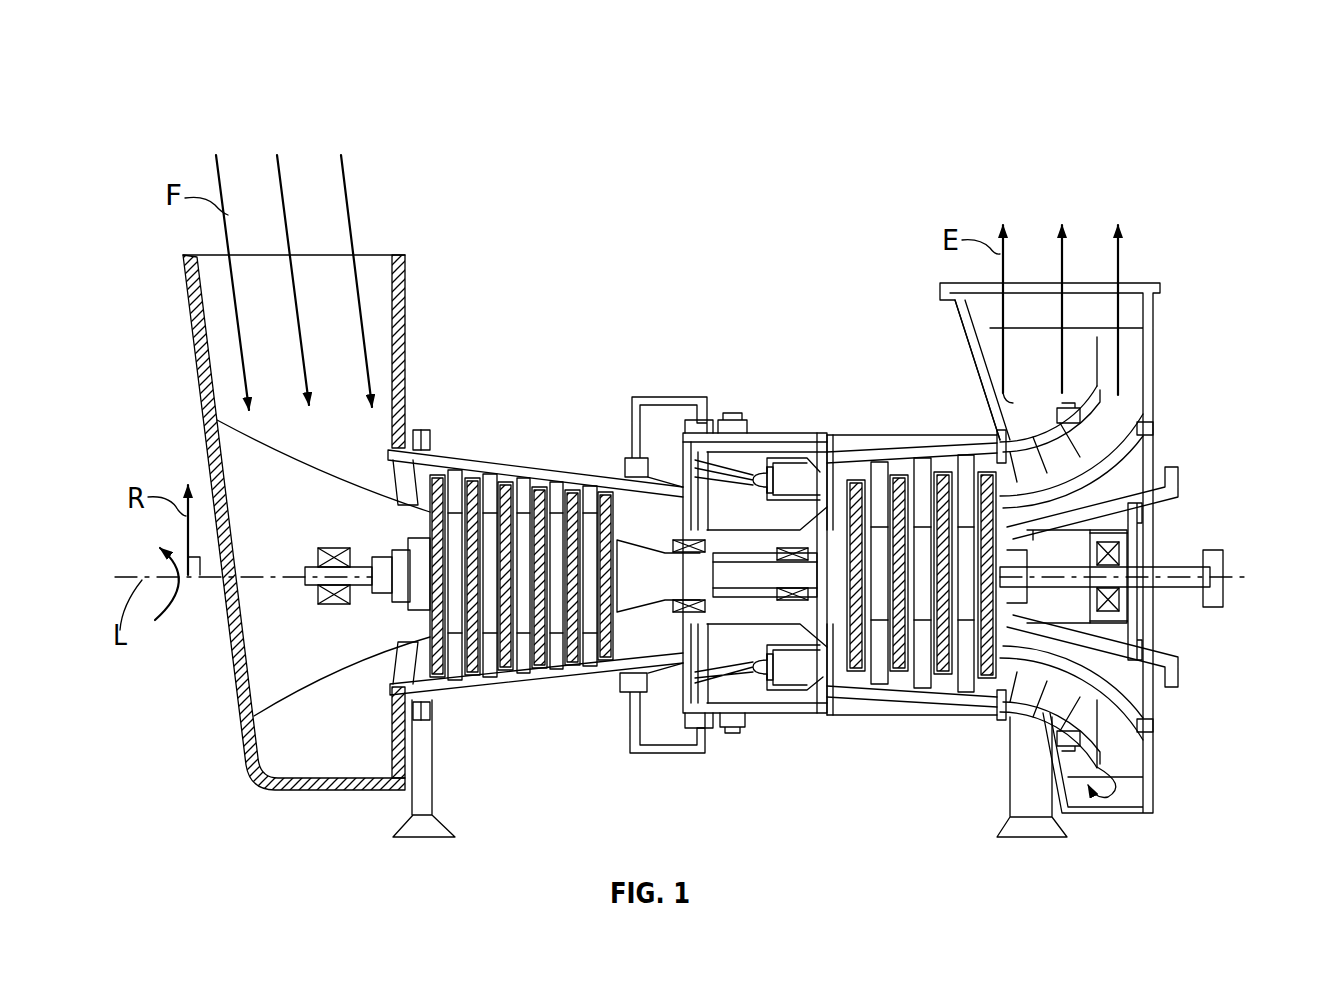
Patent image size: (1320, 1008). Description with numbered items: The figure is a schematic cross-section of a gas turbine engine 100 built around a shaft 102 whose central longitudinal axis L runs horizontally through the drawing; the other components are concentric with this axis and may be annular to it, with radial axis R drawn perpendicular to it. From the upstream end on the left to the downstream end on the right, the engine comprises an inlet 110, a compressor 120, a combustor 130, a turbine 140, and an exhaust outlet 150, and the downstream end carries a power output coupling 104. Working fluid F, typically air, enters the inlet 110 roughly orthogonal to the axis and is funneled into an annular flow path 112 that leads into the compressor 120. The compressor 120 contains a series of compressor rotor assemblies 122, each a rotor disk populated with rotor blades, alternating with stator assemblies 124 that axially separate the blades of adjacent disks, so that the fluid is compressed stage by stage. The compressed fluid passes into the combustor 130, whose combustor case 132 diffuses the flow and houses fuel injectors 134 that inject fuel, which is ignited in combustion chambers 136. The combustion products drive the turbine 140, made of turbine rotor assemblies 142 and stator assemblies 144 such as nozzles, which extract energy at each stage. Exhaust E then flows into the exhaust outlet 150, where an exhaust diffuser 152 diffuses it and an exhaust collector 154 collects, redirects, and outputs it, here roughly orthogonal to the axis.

The gas turbine engine 100 is at (160, 52).
The shaft 102 is at (310, 566).
The power output coupling 104 is at (1218, 548).
The inlet 110 is at (405, 118).
The annular flow path 112 is at (390, 470).
The compressor 120 is at (660, 118).
The compressor rotor assemblies 122 is at (507, 670).
The stator assemblies 124 is at (527, 480).
The combustor 130 is at (815, 118).
The combustor case 132 is at (757, 462).
The fuel injectors 134 is at (757, 463).
The combustion chambers 136 is at (787, 468).
The turbine 140 is at (995, 118).
The turbine rotor assemblies 142 is at (987, 670).
The stator assemblies 144 is at (962, 460).
The exhaust outlet 150 is at (1195, 150).
The exhaust diffuser 152 is at (1055, 432).
The exhaust collector 154 is at (965, 343).